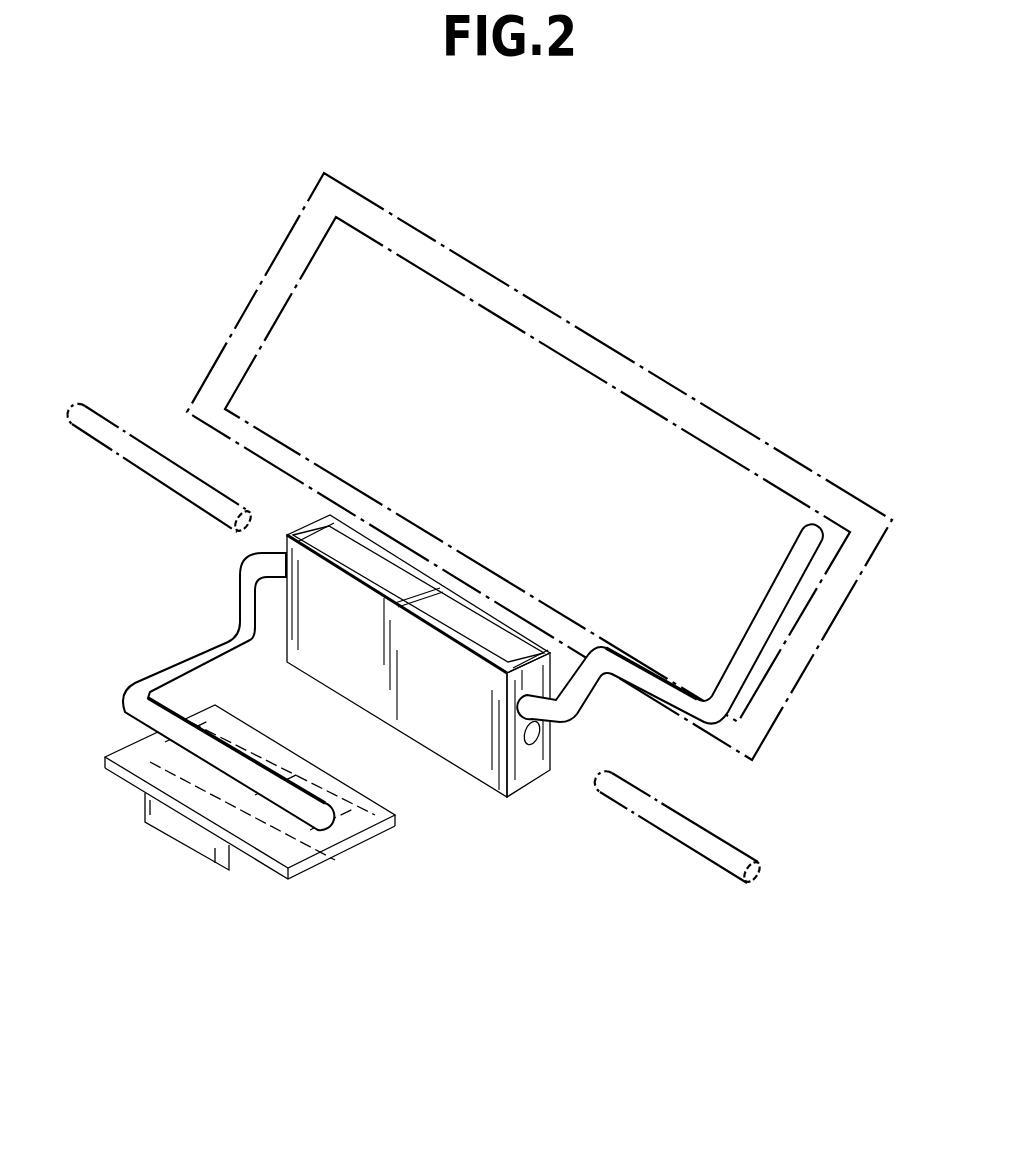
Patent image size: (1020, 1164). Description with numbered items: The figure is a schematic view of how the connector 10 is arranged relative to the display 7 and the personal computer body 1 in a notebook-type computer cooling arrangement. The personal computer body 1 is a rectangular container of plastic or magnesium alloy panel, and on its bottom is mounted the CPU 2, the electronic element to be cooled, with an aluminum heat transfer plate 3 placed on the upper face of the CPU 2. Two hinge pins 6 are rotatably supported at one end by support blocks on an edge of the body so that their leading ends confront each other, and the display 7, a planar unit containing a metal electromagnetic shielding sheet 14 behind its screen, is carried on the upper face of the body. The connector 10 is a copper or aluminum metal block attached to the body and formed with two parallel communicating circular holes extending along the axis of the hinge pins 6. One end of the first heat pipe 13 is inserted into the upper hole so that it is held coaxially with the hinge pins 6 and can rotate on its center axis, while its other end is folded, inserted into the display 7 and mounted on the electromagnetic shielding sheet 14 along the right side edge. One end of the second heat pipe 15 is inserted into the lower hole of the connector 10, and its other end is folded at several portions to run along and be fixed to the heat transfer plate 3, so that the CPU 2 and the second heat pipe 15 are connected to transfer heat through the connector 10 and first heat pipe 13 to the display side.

The personal computer body 1 is at (452, 900).
The CPU 2 is at (178, 823).
The heat transfer plate 3 is at (158, 770).
The hinge pins 6 is at (163, 498).
The display 7 is at (432, 253).
The connector 10 is at (380, 697).
The first heat pipe 13 is at (765, 617).
The electromagnetic shielding sheet 14 is at (542, 370).
The second heat pipe 15 is at (280, 788).